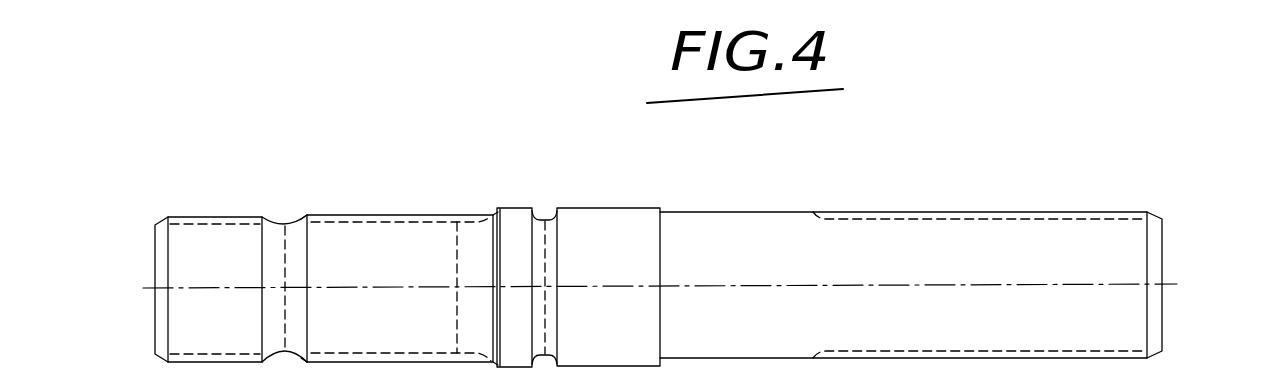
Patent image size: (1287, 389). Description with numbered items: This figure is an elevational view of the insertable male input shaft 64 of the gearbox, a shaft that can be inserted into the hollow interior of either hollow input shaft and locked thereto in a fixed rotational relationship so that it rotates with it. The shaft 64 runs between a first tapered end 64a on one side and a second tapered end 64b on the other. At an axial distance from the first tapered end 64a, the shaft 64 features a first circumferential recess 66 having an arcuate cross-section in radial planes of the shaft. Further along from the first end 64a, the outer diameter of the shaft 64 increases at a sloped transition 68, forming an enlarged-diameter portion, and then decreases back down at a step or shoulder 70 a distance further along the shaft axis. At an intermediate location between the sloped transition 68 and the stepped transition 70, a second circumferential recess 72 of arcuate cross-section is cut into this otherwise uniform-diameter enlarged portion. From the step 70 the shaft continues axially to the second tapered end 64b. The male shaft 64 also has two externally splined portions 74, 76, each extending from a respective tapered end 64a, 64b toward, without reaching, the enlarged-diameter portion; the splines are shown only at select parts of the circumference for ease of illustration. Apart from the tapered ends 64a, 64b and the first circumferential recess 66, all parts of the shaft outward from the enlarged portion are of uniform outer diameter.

The male input shaft 64 is at (238, 151).
The first tapered end 64a is at (158, 240).
The second tapered end 64b is at (1167, 243).
The first circumferential recess 66 is at (285, 221).
The sloped transition 68 is at (491, 210).
The step or shoulder 70 is at (663, 208).
The second circumferential recess 72 is at (543, 213).
The externally splined portion 74 is at (372, 215).
The externally splined portion 76 is at (997, 210).